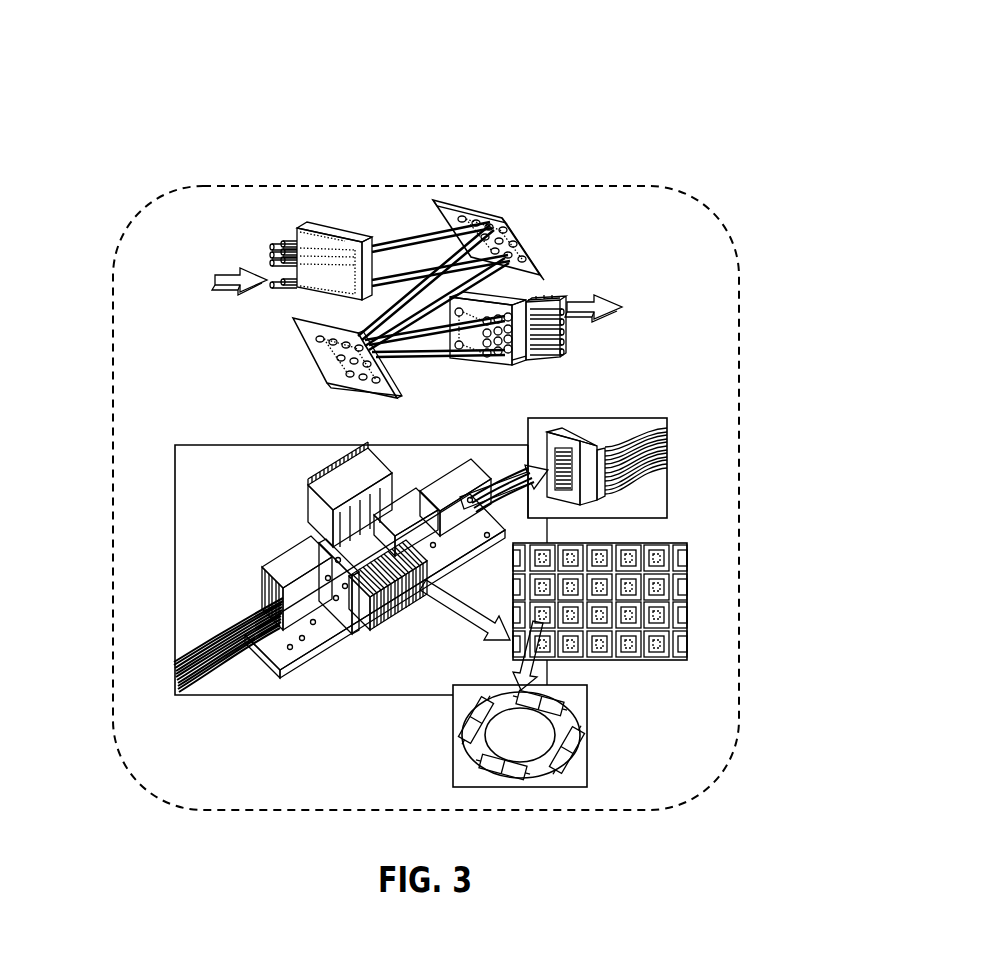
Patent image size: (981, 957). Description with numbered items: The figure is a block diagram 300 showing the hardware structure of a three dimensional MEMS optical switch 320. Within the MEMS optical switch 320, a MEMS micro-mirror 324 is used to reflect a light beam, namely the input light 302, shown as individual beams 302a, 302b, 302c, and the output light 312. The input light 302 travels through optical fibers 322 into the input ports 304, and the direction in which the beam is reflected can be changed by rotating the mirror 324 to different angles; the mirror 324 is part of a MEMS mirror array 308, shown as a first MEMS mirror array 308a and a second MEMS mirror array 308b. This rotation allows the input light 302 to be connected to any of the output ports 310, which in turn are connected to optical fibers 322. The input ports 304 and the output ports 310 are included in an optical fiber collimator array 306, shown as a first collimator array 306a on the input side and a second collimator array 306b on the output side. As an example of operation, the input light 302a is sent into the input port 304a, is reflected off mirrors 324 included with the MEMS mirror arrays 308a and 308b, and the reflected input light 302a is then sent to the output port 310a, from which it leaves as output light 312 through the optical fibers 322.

The block diagram 300 is at (108, 58).
The input light 302 is at (222, 280).
The input light 302a is at (372, 250).
The input light 302b is at (418, 228).
The input light 302c is at (442, 262).
The input ports 304 is at (296, 228).
The input port 304a is at (340, 228).
The optical fiber collimator array 306 is at (282, 596).
The optical fiber collimator array 306a is at (284, 293).
The optical fiber collimator array 306b is at (575, 324).
The MEMS mirror array 308 is at (658, 573).
The MEMS mirror array 308a is at (482, 214).
The MEMS mirror array 308b is at (292, 323).
The output ports 310 is at (548, 300).
The output port 310a is at (530, 363).
The output light 312 is at (625, 318).
The MEMS optical switch 320 is at (345, 481).
The optical fibers 322 is at (215, 668).
The MEMS micro-mirror 324 is at (322, 348).